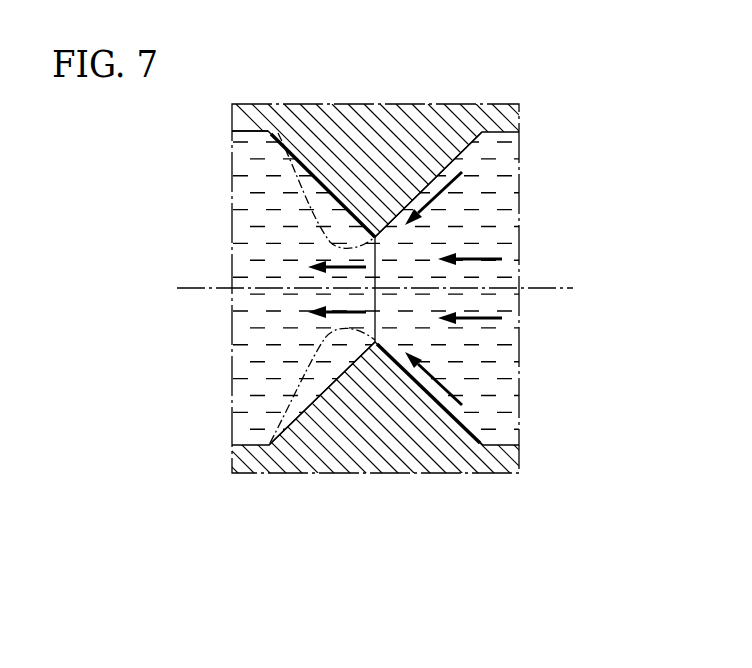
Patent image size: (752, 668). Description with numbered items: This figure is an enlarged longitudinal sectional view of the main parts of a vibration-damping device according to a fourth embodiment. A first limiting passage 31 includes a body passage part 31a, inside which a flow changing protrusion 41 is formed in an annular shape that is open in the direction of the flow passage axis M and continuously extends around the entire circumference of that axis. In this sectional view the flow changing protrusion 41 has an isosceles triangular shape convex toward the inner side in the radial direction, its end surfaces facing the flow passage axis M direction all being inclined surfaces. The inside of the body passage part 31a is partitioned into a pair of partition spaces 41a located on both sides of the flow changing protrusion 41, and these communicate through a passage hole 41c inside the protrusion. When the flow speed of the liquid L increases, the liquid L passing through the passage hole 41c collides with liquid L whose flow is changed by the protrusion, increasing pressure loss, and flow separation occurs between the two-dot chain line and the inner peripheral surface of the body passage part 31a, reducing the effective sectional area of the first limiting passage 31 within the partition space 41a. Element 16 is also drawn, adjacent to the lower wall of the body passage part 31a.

The first limiting passage 31 is at (522, 370).
The body passage part 31a is at (253, 133).
The flow changing protrusion 41 is at (352, 197).
The partition space 41a is at (460, 203).
The passage hole 41c is at (376, 238).
The bottom wall 16 is at (368, 487).
The liquid L is at (507, 425).
The flow passage axis M is at (548, 288).